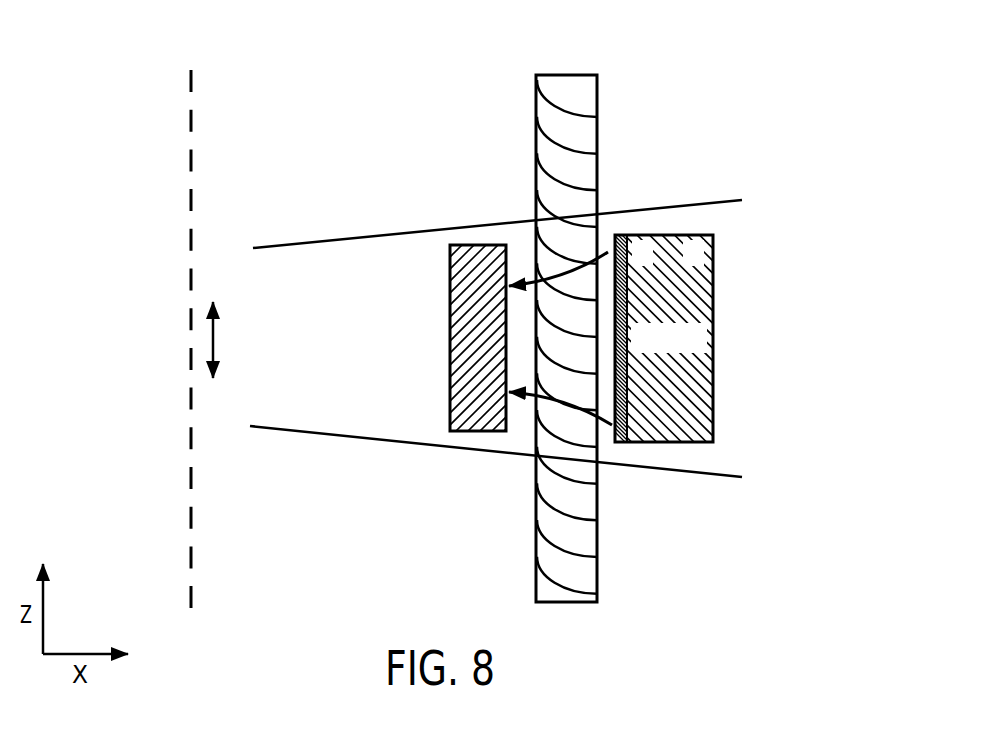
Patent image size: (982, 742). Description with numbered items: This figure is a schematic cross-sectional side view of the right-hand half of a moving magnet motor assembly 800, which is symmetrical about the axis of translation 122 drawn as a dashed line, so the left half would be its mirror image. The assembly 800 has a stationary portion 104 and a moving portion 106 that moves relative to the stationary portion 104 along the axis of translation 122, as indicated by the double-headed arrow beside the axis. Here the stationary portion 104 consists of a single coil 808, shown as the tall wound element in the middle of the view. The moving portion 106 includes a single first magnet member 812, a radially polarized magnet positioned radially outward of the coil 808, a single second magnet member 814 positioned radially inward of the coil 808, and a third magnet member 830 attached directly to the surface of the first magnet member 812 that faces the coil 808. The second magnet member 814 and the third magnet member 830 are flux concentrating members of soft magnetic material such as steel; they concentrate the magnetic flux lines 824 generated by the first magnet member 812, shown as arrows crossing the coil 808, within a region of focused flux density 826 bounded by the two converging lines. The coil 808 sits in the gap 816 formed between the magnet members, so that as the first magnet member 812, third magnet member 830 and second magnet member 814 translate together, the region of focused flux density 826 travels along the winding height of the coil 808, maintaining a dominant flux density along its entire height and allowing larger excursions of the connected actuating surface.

The assembly 800 is at (783, 95).
The stationary portion 104 is at (606, 308).
The moving portion 106 is at (702, 337).
The axis of translation 122 is at (193, 123).
The coil 808 is at (568, 73).
The first magnet member 812 is at (665, 234).
The second magnet member 814 is at (462, 244).
The gap 816 is at (606, 439).
The magnetic flux lines 824 is at (533, 277).
The region of focused flux density 826 is at (697, 479).
The third magnet member 830 is at (617, 234).